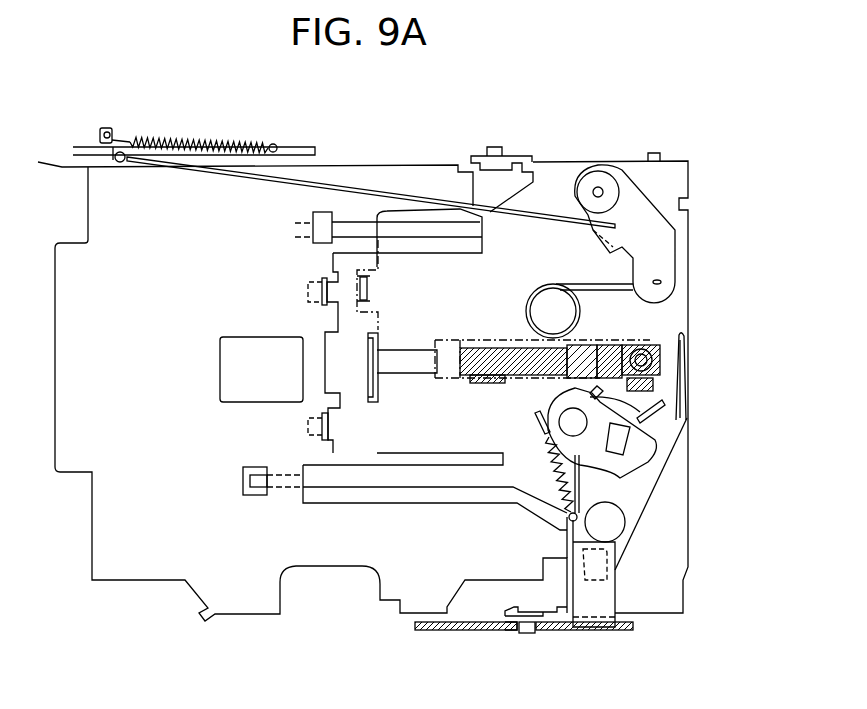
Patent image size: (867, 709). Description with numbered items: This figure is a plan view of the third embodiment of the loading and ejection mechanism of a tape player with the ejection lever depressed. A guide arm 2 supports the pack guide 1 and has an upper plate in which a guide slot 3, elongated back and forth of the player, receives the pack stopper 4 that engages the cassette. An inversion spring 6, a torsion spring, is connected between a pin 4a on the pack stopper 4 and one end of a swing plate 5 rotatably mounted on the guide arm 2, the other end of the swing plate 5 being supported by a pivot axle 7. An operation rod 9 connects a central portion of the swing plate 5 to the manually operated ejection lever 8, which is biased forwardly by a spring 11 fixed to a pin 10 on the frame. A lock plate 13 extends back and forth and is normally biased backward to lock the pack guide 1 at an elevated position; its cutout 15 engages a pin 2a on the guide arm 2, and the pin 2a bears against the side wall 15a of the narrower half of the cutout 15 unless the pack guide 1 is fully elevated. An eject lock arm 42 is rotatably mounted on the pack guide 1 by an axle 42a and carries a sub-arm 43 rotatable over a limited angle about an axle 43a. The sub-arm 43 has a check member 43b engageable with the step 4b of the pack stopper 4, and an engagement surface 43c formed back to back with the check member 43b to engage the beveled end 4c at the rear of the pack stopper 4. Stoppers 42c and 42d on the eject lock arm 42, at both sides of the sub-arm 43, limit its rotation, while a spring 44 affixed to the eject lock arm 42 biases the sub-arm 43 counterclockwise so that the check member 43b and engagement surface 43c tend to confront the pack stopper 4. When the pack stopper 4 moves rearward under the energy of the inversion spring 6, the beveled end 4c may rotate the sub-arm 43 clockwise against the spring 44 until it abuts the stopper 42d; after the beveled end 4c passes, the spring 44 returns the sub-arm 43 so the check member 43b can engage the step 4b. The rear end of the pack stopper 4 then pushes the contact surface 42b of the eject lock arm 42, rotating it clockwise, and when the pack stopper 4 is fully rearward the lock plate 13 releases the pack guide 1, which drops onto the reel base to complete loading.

The pack guide 1 is at (237, 597).
The guide arm 2 is at (522, 607).
The pin 2a is at (528, 633).
The guide slot 3 is at (410, 372).
The pack stopper 4 is at (490, 380).
The pin 4a is at (648, 342).
The step 4b is at (645, 396).
The beveled end 4c is at (650, 372).
The swing plate 5 is at (666, 258).
The inversion spring 6 is at (580, 313).
The pivot axle 7 is at (598, 190).
The ejection lever 8 is at (303, 148).
The operation rod 9 is at (377, 212).
The pin 10 is at (100, 135).
The spring 11 is at (182, 142).
The lock plate 13 is at (450, 628).
The cutout 15 is at (543, 630).
The side wall 15a is at (510, 628).
The eject lock arm 42 is at (652, 522).
The axle 42a is at (613, 520).
The contact surface 42b is at (685, 358).
The stopper 42c is at (645, 412).
The stopper 42d is at (566, 474).
The sub-arm 43 is at (608, 437).
The axle 43a is at (548, 433).
The check member 43b is at (638, 430).
The engagement surface 43c is at (577, 390).
The spring 44 is at (555, 456).